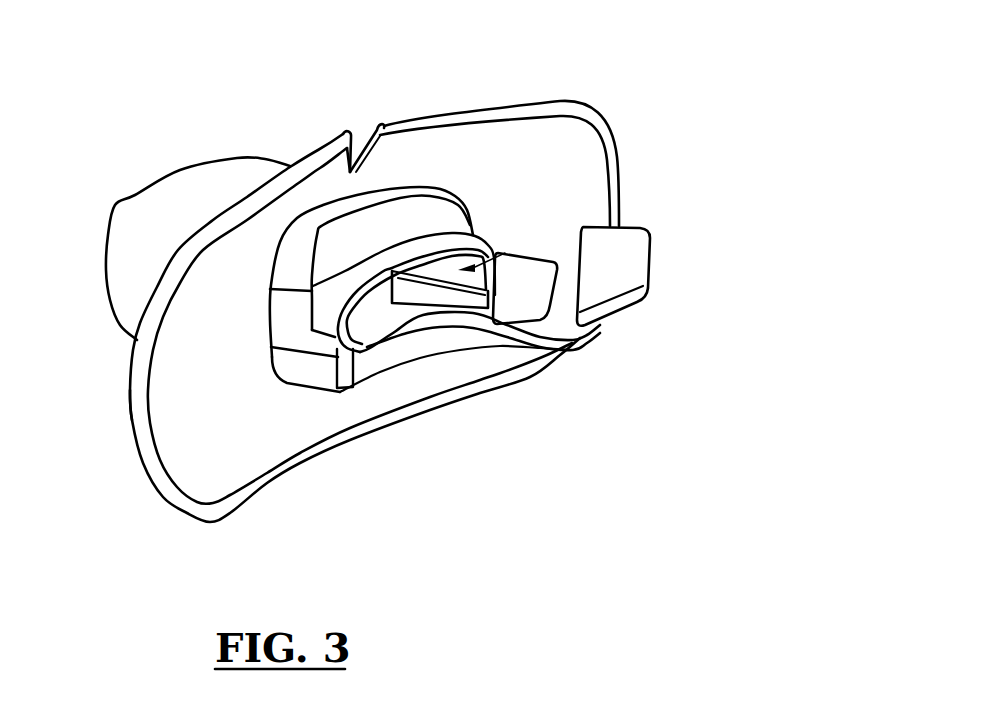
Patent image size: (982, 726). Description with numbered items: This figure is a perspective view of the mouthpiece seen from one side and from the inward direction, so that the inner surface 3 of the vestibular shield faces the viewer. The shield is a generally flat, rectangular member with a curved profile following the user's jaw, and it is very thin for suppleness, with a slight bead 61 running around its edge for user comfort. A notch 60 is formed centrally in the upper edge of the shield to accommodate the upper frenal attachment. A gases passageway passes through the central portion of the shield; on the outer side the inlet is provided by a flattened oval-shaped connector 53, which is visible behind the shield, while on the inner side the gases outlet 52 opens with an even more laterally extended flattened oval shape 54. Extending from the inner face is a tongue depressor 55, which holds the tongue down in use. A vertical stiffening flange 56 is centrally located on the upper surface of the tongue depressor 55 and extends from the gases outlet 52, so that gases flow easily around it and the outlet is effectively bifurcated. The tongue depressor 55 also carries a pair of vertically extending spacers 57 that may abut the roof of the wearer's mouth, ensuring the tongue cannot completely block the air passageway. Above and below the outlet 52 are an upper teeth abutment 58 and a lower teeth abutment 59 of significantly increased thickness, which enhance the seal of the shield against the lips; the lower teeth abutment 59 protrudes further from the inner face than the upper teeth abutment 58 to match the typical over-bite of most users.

The inner surface 3 is at (183, 412).
The outlet 52 is at (505, 253).
The flattened oval-shaped connector 53 is at (205, 177).
The flattened oval shape 54 is at (354, 348).
The tongue depressor 55 is at (520, 333).
The vertical stiffening flange 56 is at (438, 298).
The vertically extending spacers 57 is at (533, 292).
The upper teeth abutment 58 is at (423, 213).
The lower teeth abutment 59 is at (340, 389).
The notch 60 is at (365, 132).
The bead 61 is at (566, 104).